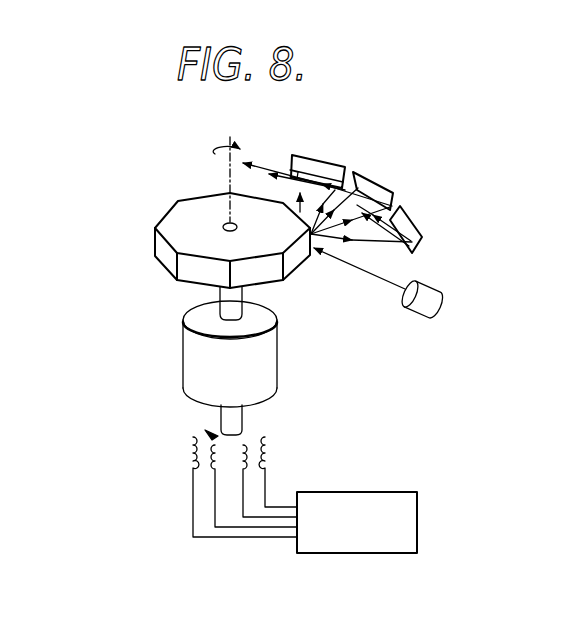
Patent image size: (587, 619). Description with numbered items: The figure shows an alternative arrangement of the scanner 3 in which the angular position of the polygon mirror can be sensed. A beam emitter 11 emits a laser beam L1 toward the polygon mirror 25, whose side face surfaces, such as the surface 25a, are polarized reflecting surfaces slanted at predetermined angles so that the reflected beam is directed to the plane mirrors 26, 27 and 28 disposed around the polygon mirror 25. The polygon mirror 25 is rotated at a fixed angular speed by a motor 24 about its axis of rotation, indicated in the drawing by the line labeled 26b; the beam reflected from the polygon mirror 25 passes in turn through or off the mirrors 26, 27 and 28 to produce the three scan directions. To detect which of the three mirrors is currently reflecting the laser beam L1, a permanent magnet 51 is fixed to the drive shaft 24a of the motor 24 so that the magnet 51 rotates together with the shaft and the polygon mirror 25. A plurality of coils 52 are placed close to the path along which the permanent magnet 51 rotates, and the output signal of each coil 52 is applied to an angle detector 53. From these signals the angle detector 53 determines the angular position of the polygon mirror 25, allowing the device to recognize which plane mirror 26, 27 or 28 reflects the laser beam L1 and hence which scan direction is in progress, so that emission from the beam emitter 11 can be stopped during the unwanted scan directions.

The scanner 3 is at (196, 286).
The beam emitter 11 is at (438, 285).
The motor 24 is at (278, 365).
The drive shaft 24a is at (243, 417).
The polygon mirror 25 is at (173, 227).
The side face surface 25a is at (311, 257).
The plane mirror 26 is at (405, 210).
The rotation axis 26b is at (228, 180).
The plane mirror 27 is at (384, 172).
The plane mirror 28 is at (325, 153).
The permanent magnet 51 is at (205, 428).
The coils 52 is at (210, 470).
The angle detector 53 is at (418, 502).
The laser beam L1 is at (378, 282).